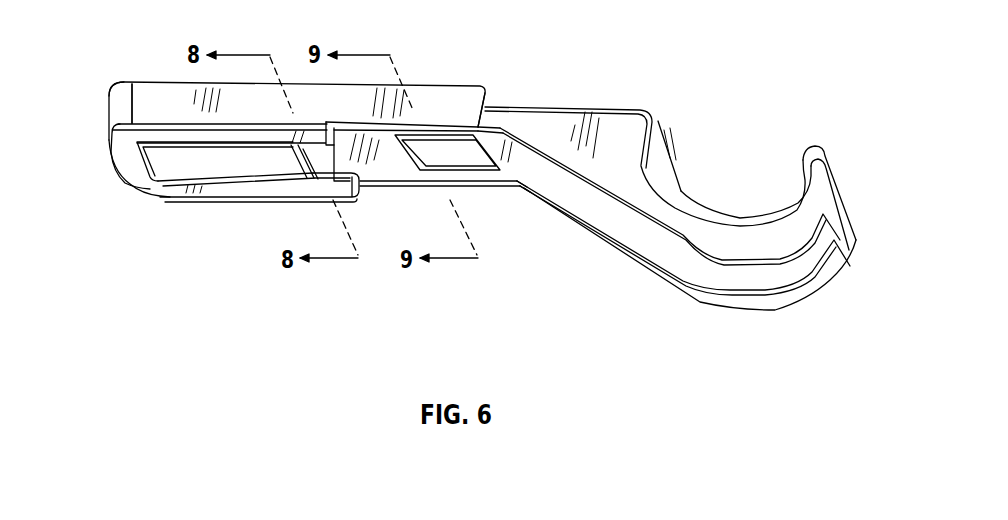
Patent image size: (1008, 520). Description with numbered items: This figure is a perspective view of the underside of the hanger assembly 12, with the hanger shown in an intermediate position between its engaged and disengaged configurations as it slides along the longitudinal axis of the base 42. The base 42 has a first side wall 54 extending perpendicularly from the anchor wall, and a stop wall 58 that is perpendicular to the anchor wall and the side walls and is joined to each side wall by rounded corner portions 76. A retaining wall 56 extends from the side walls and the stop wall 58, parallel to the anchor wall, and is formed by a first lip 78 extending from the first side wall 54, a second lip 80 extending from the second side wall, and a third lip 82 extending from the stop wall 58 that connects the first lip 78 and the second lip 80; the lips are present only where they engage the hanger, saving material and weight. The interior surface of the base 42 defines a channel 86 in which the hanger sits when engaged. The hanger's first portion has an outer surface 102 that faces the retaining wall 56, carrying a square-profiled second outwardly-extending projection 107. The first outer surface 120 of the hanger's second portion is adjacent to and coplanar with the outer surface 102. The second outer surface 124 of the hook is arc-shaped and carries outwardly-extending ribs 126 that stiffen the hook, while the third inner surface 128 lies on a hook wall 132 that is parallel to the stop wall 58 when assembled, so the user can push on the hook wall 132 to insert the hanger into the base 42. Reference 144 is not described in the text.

The hanger assembly 12 is at (781, 48).
The base 42 is at (448, 112).
The first side wall 54 is at (150, 100).
The retaining wall 56 is at (170, 192).
The stop wall 58 is at (130, 173).
The rounded corner portions 76 is at (119, 116).
The first lip 78 is at (227, 141).
The second lip 80 is at (243, 192).
The third lip 82 is at (128, 144).
The channel 86 is at (285, 170).
The outer surface 102 is at (387, 145).
The second outwardly-extending projection 107 is at (505, 165).
The first outer surface 120 is at (511, 188).
The second outer surface 124 is at (813, 232).
The ribs 126 is at (740, 262).
The third inner surface 128 is at (665, 173).
The hook wall 132 is at (651, 146).
The connecting portion 144 is at (541, 127).